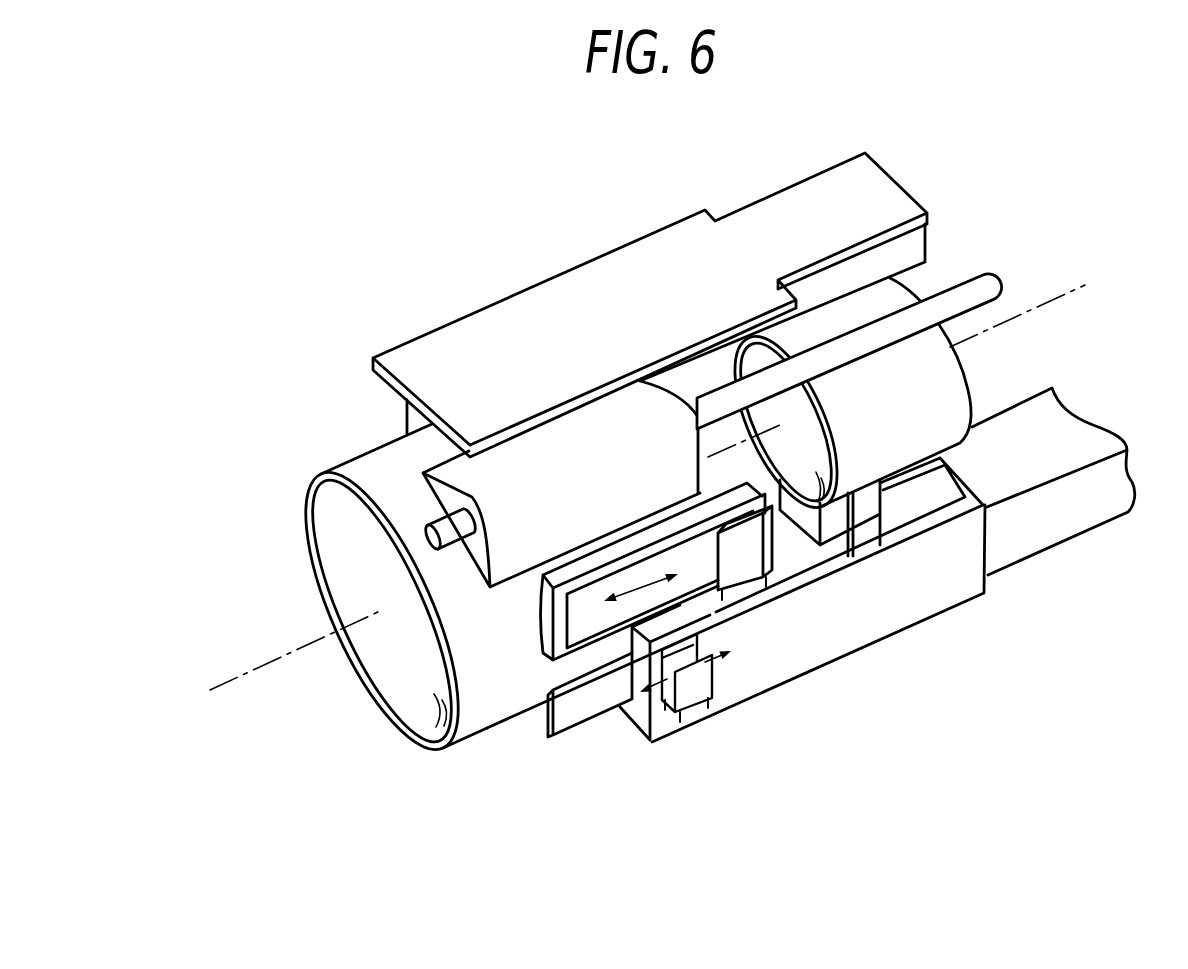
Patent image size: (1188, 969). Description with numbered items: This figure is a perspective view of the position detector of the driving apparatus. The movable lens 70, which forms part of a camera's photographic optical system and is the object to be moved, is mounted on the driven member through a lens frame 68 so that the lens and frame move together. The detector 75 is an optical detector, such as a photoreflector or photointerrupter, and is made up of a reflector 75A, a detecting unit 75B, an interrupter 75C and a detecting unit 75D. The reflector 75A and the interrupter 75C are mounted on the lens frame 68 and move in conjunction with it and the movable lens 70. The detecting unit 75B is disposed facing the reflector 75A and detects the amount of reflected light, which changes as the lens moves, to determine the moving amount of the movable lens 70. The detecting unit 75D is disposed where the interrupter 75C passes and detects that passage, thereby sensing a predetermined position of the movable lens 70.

The lens frame 68 is at (480, 712).
The movable lens 70 is at (402, 700).
The detector 75 is at (760, 651).
The reflector 75A is at (697, 593).
The detecting unit 75B is at (763, 552).
The interrupter 75C is at (583, 703).
The detecting unit 75D is at (706, 703).